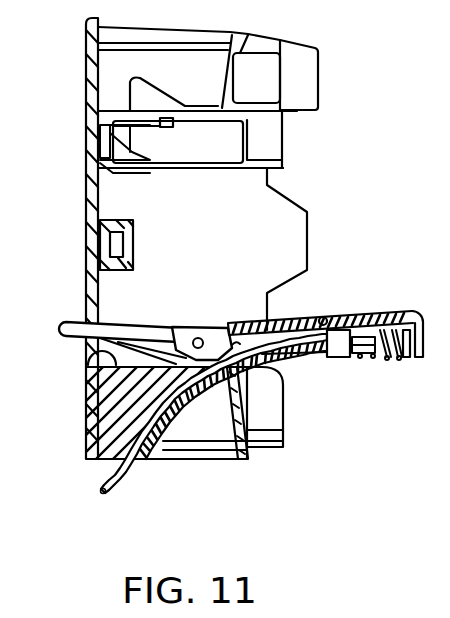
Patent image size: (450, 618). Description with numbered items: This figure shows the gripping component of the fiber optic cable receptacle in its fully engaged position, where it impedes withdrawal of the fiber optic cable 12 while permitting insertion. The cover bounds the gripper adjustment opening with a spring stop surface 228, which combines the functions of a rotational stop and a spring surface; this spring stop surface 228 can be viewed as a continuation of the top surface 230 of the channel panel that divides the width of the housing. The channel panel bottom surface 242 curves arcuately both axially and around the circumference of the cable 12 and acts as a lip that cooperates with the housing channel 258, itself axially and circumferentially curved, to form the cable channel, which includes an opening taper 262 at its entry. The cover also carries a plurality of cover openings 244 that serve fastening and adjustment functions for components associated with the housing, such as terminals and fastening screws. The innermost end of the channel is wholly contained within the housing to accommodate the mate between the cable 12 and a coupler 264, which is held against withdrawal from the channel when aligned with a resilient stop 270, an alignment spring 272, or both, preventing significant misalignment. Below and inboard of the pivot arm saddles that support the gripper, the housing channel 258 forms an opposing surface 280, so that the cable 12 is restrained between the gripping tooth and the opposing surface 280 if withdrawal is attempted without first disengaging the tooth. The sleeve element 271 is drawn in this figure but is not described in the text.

The fiber optic cable 12 is at (100, 472).
The spring stop surface 228 is at (88, 353).
The top surface 230 is at (173, 328).
The channel panel bottom surface 242 is at (163, 432).
The cover openings 244 is at (92, 140).
The housing channel 258 is at (238, 345).
The opening taper 262 is at (135, 462).
The coupler 264 is at (340, 360).
The resilient stop 270 is at (380, 311).
The upper sleeve 271 is at (302, 348).
The alignment spring 272 is at (383, 365).
The opposing surface 280 is at (212, 373).